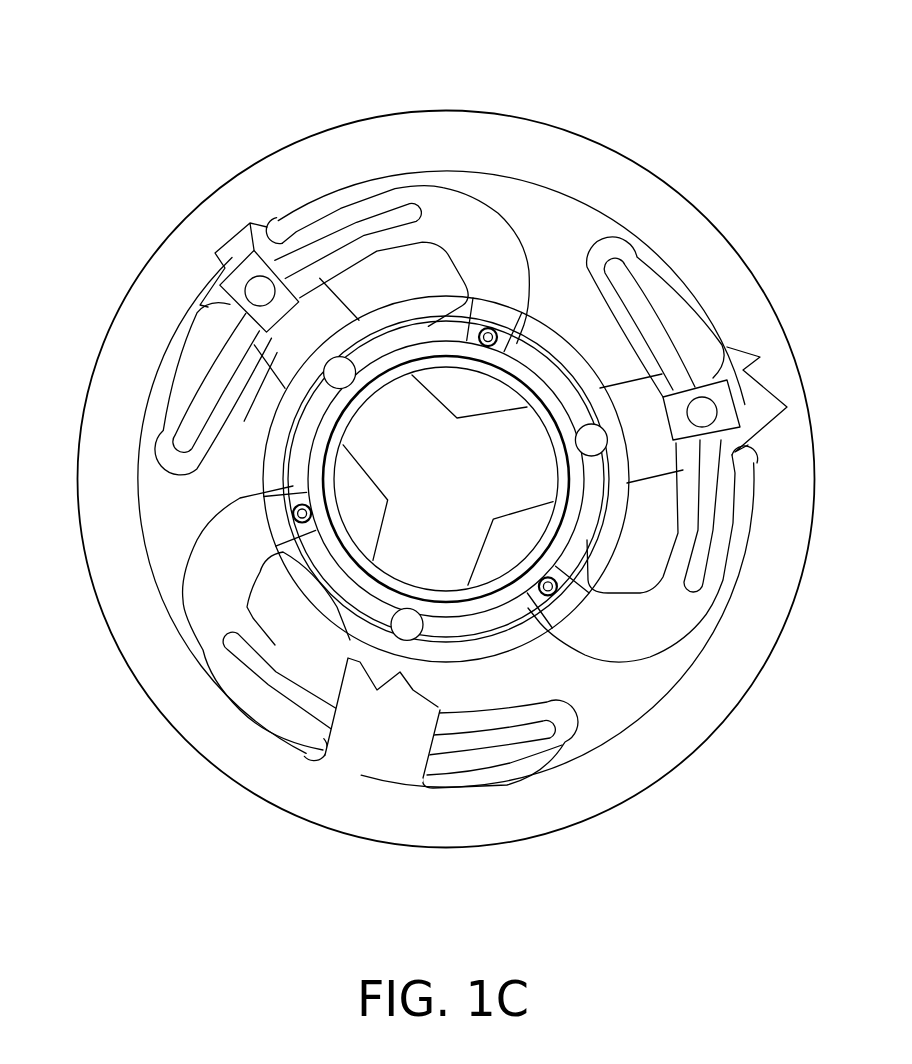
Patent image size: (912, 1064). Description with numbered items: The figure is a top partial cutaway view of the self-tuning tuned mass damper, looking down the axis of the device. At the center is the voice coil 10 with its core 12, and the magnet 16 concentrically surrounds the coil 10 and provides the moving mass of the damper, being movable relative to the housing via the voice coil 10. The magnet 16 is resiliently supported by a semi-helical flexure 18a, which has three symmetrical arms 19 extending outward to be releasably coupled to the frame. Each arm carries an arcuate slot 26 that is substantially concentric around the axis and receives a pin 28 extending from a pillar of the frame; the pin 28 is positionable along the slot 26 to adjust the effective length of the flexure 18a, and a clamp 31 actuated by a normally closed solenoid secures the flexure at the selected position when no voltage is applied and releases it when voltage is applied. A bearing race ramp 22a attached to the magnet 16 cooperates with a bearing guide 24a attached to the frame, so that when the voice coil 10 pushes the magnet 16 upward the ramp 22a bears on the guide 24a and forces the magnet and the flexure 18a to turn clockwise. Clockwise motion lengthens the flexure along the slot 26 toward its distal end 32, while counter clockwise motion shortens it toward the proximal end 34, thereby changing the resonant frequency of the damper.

The voice coil 10 is at (507, 582).
The core 12 is at (365, 405).
The magnet 16 is at (453, 615).
The semi-helical flexure 18a is at (485, 225).
The arm 19 is at (322, 225).
The bearing race ramp 22a is at (560, 380).
The bearing guide 24a is at (593, 430).
The arcuate slot 26 is at (347, 233).
The pin 28 is at (238, 280).
The clamp 31 is at (234, 280).
The distal end 32 is at (187, 458).
The proximal end 34 is at (415, 210).